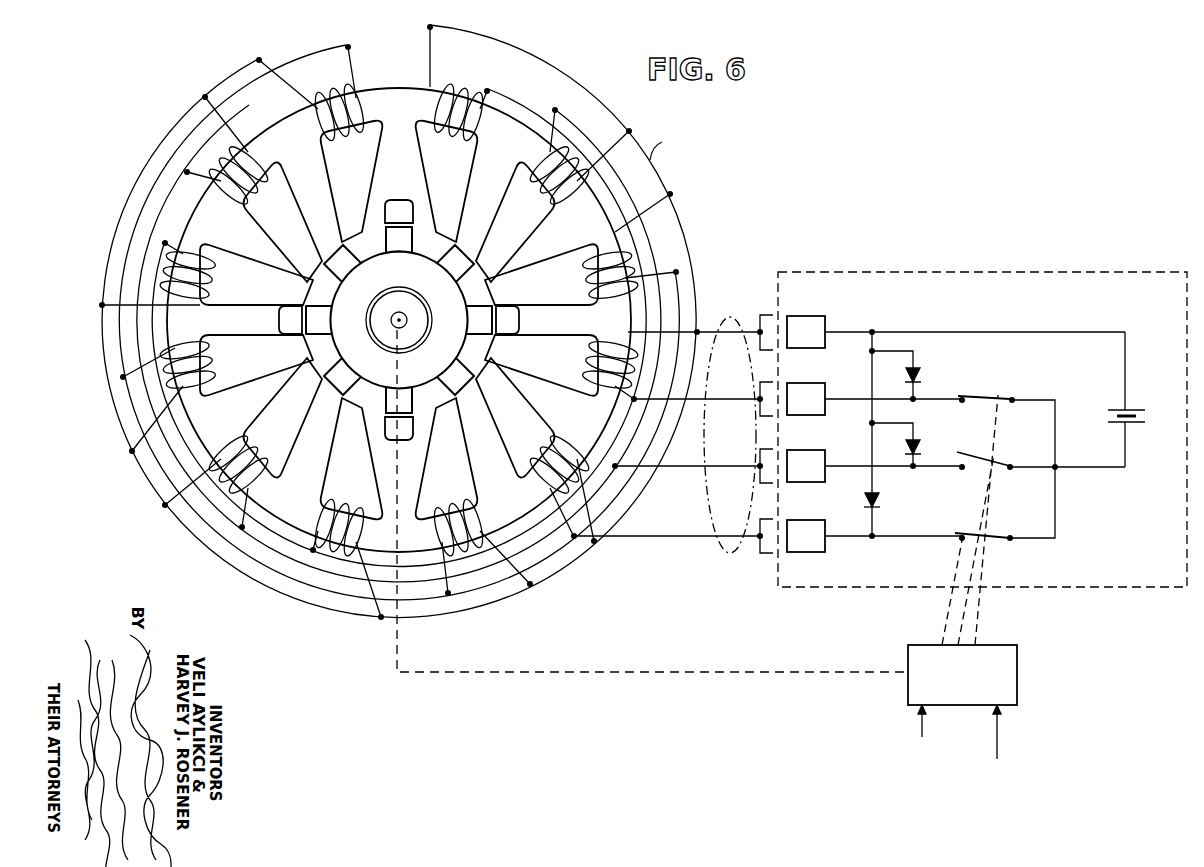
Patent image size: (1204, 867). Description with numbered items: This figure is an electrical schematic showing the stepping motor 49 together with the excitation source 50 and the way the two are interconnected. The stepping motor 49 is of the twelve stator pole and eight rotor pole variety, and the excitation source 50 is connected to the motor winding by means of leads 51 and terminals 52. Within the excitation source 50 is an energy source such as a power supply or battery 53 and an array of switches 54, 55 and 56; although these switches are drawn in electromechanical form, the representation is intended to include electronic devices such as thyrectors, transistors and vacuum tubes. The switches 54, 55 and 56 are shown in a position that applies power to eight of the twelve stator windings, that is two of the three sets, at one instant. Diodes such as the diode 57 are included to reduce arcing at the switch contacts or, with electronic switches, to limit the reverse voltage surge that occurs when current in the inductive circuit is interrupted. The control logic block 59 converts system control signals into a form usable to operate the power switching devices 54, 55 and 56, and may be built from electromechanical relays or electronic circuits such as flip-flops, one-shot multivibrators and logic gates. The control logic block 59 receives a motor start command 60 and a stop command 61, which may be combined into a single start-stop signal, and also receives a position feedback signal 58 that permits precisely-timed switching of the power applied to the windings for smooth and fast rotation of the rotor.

The stepping motor 49 is at (502, 92).
The excitation source 50 is at (880, 267).
The leads 51 is at (716, 553).
The terminals 52 is at (760, 315).
The battery 53 is at (1141, 408).
The switch 54 is at (966, 396).
The switch 55 is at (989, 453).
The switch 56 is at (989, 531).
The diode 57 is at (866, 502).
The position feedback signal 58 is at (636, 672).
The control logic block 59 is at (908, 650).
The motor start command 60 is at (1000, 728).
The stop command 61 is at (916, 723).